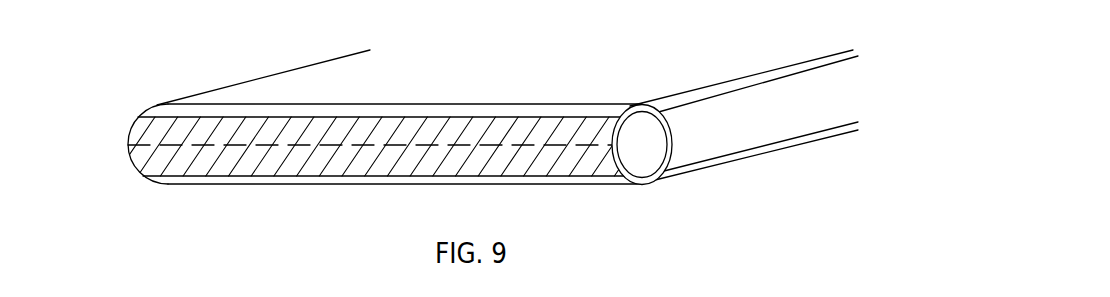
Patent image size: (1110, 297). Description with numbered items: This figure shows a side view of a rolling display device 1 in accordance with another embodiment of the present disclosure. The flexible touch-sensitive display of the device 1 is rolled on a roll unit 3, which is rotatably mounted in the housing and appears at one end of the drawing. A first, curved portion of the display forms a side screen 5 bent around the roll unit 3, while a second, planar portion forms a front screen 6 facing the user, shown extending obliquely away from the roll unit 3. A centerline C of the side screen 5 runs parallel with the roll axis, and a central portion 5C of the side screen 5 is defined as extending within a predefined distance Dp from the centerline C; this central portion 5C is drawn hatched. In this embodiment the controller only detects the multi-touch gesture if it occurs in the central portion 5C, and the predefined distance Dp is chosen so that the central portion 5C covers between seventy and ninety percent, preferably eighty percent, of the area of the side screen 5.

The rolling display device 1 is at (195, 71).
The side screen 5 is at (510, 112).
The central portion 5C is at (555, 165).
The roll unit 3 is at (643, 178).
The front screen 6 is at (653, 68).
The centerline C is at (390, 145).
The predefined distance Dp is at (130, 117).